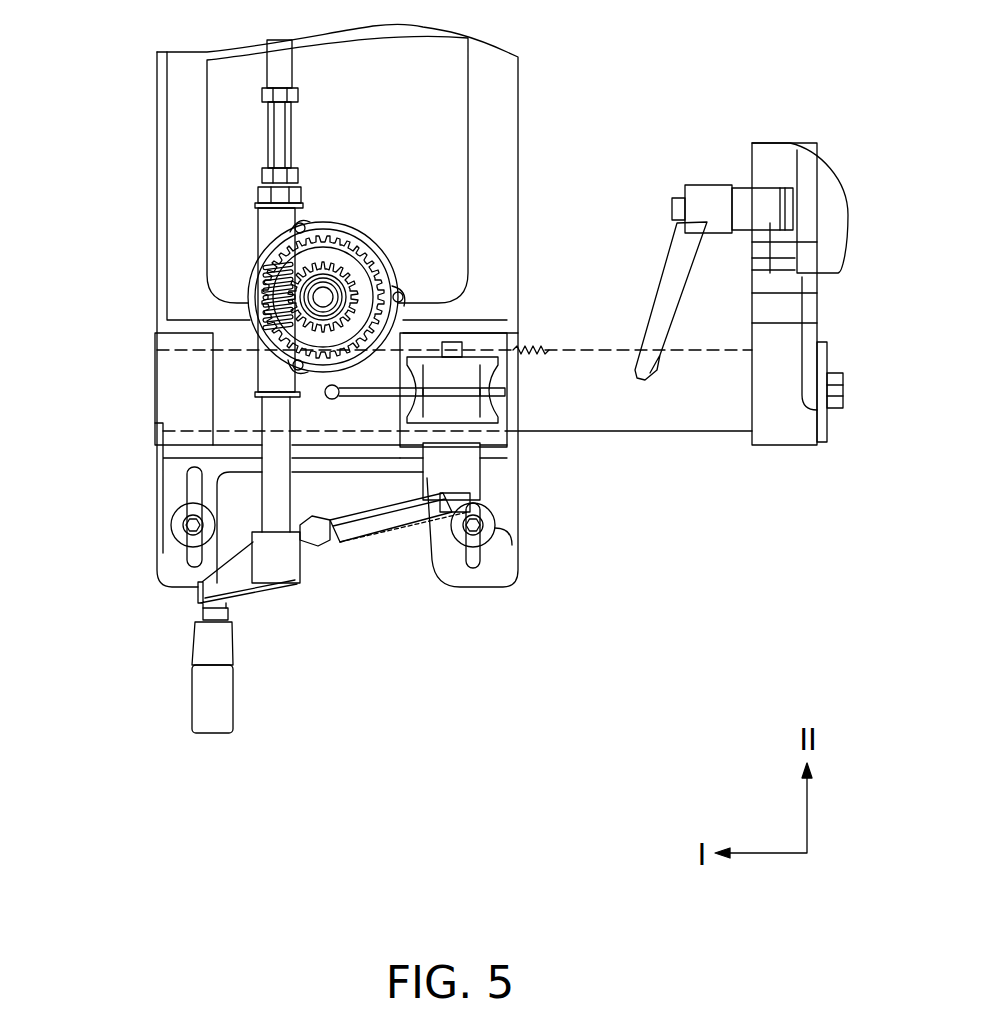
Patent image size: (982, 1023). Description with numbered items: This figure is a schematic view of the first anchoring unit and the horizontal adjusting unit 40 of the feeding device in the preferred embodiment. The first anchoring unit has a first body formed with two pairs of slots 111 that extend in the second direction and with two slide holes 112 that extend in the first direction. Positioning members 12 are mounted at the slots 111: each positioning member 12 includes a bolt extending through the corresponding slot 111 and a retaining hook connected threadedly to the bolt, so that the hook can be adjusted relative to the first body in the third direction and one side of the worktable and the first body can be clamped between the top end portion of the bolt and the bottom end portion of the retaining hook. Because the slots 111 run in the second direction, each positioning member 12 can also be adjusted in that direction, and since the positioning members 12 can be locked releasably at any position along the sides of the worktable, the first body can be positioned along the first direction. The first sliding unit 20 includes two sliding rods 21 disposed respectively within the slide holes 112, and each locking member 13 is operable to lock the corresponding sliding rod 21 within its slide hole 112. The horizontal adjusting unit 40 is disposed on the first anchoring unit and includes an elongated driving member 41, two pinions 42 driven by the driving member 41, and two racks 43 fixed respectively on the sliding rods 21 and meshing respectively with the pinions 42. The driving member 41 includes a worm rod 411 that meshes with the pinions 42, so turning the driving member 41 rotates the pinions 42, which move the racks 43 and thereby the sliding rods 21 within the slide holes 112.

The positioning member 12 is at (483, 528).
The locking member 13 is at (435, 483).
The first sliding unit 20 is at (686, 438).
The sliding rod 21 is at (623, 413).
The horizontal adjusting unit 40 is at (214, 745).
The driving member 41 is at (275, 508).
The pinion 42 is at (307, 270).
The rack 43 is at (327, 363).
The slot 111 is at (468, 567).
The slide hole 112 is at (200, 433).
The worm rod 411 is at (260, 290).